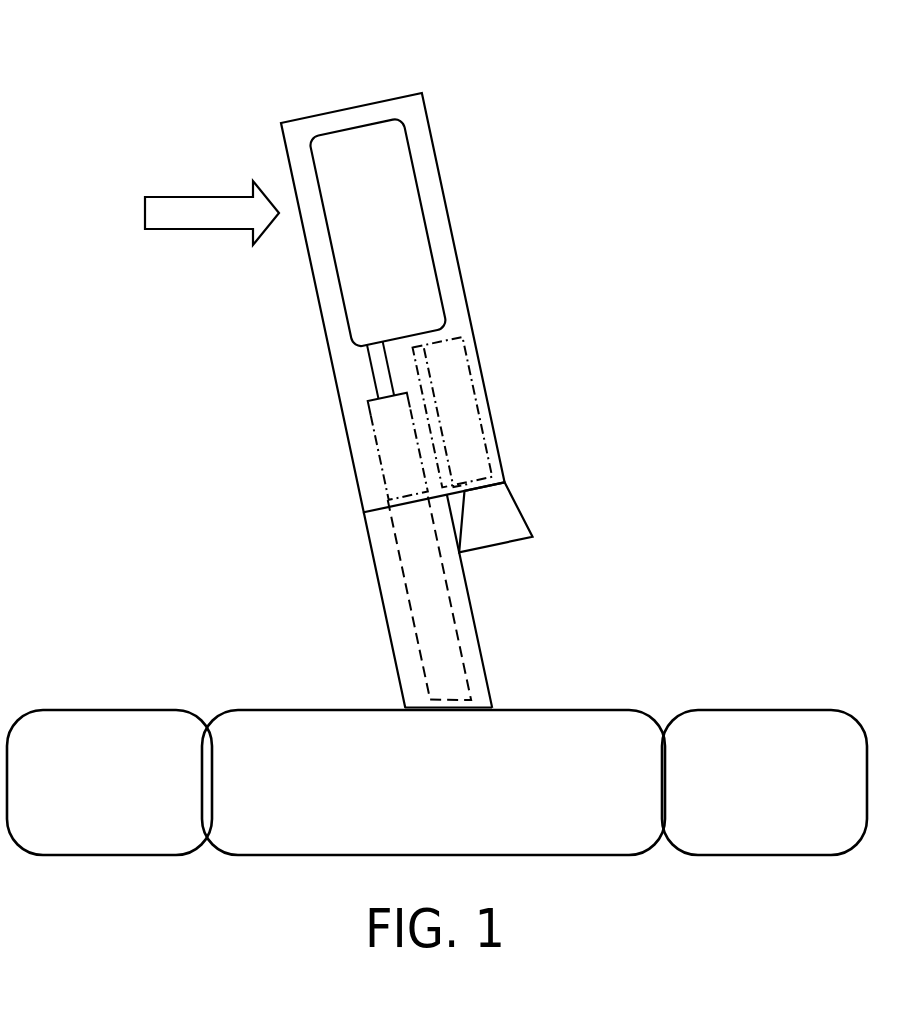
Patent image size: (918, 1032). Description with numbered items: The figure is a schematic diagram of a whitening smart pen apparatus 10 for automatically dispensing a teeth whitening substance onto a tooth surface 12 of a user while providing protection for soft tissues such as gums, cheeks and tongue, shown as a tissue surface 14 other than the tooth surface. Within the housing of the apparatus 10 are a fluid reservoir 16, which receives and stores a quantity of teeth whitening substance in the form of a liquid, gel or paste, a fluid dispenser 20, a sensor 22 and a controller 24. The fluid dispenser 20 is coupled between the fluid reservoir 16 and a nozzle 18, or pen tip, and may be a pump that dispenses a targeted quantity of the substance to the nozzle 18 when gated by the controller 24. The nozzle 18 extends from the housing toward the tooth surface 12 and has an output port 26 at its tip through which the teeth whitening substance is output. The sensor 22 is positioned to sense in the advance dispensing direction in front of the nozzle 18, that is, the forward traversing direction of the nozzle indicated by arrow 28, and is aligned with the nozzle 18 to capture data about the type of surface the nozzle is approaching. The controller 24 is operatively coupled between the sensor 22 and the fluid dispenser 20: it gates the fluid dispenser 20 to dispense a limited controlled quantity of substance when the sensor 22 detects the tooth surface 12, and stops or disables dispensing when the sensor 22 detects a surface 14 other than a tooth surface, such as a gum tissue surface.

The whitening smart pen apparatus 10 is at (147, 93).
The tooth surface 12 is at (423, 815).
The tissue surface other than the tooth surface 14 is at (89, 815).
The fluid reservoir 16 is at (410, 155).
The nozzle 18 is at (390, 610).
The fluid dispenser 20 is at (381, 462).
The sensor 22 is at (523, 508).
The controller 24 is at (463, 367).
The output port 26 is at (478, 705).
The arrow 28 is at (208, 187).